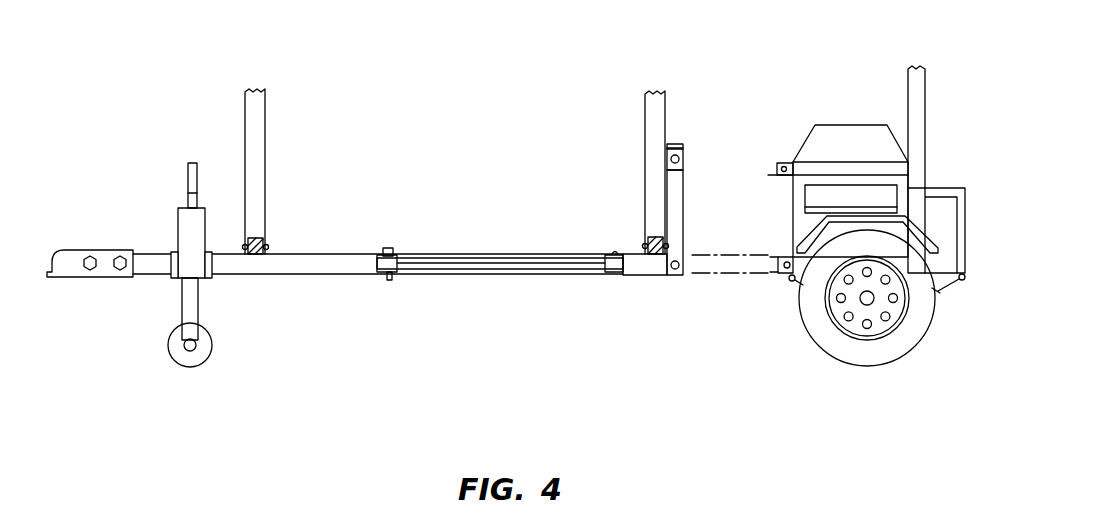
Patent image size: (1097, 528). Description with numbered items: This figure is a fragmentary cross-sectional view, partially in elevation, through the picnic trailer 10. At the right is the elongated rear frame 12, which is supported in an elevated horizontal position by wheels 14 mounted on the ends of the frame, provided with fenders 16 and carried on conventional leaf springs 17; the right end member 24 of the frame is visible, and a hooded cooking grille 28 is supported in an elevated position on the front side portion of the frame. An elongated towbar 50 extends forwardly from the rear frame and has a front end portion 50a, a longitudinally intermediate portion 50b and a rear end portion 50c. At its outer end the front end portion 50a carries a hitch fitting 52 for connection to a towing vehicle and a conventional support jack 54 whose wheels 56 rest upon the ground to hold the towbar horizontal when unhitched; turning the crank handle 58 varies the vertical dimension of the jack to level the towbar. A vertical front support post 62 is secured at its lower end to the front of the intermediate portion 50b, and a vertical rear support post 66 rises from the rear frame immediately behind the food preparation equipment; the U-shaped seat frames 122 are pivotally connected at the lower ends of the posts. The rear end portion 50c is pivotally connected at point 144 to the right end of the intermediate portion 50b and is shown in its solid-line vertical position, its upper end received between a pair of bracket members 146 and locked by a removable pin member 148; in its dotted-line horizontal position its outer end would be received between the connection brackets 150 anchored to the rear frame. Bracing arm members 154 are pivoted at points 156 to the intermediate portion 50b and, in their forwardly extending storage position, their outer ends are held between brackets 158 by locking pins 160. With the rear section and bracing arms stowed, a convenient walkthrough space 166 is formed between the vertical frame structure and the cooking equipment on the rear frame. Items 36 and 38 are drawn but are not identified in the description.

The trailer 10 is at (545, 92).
The rear frame 12 is at (871, 200).
The wheels 14 is at (826, 350).
The fenders 16 is at (942, 196).
The leaf springs 17 is at (790, 282).
The right end member 24 is at (940, 286).
The hooded cooking grille 28 is at (862, 160).
The frame side member 36 is at (965, 232).
The fender brace 38 is at (927, 189).
The towbar 50 is at (369, 249).
The front end portion 50a is at (153, 277).
The longitudinally intermediate portion 50b is at (311, 275).
The rear end portion 50c is at (684, 193).
The hitch fitting 52 is at (90, 248).
The support jack 54 is at (203, 303).
The wheels 56 is at (176, 350).
The crank handle 58 is at (188, 172).
The front support post 62 is at (266, 184).
The rear support post 66 is at (925, 122).
The seat frame 122 is at (258, 236).
The pivot point 144 is at (675, 276).
The bracket members 146 is at (686, 155).
The removable pin member 148 is at (677, 144).
The connection brackets 150 is at (782, 256).
The bracing arm members 154 is at (512, 258).
The pivot points 156 is at (612, 273).
The brackets 158 is at (397, 256).
The locking pins 160 is at (387, 248).
The walkthrough space 166 is at (736, 284).